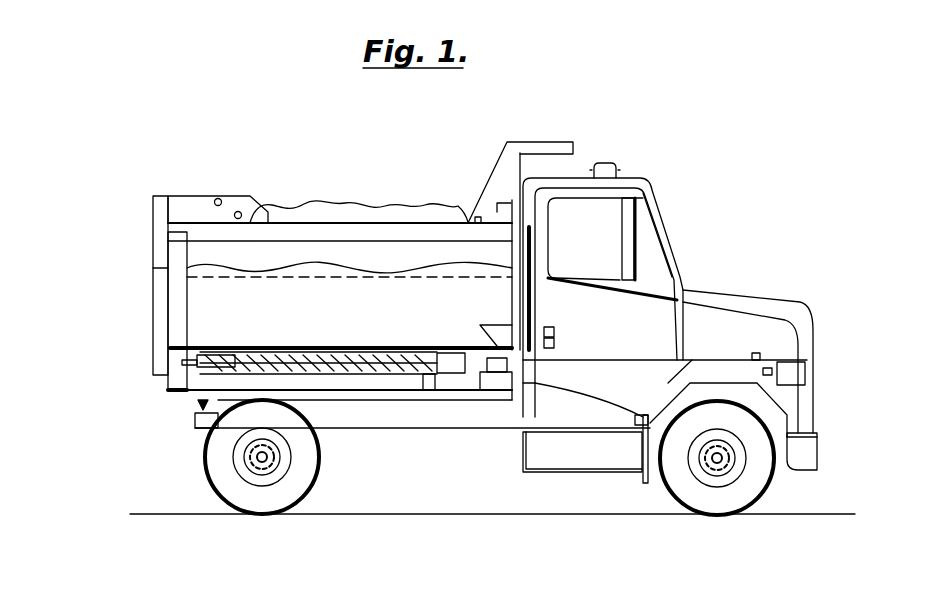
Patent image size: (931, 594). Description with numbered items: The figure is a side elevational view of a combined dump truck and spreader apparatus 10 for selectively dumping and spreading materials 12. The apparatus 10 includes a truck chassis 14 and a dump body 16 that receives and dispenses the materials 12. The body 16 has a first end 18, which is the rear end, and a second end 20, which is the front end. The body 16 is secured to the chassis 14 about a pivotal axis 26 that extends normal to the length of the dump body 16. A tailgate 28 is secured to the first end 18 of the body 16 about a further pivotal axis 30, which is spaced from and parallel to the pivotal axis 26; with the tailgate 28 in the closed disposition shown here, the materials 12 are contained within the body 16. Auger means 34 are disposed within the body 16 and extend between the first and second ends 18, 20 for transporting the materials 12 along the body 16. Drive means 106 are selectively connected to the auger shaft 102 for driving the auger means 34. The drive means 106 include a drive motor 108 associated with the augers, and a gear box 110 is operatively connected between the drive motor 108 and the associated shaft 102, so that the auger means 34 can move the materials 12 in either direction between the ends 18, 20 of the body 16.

The combined dump truck and spreader apparatus 10 is at (545, 127).
The materials 12 is at (334, 213).
The truck chassis 14 is at (425, 416).
The dump body 16 is at (225, 307).
The first end 18 is at (177, 343).
The second end 20 is at (427, 350).
The pivotal axis 26 is at (222, 422).
The tailgate 28 is at (167, 262).
The further pivotal axis 30 is at (216, 199).
The auger means 34 is at (243, 366).
The shaft 102 is at (385, 360).
The drive means 106 is at (453, 368).
The drive motor 108 is at (418, 376).
The gear box 110 is at (640, 416).